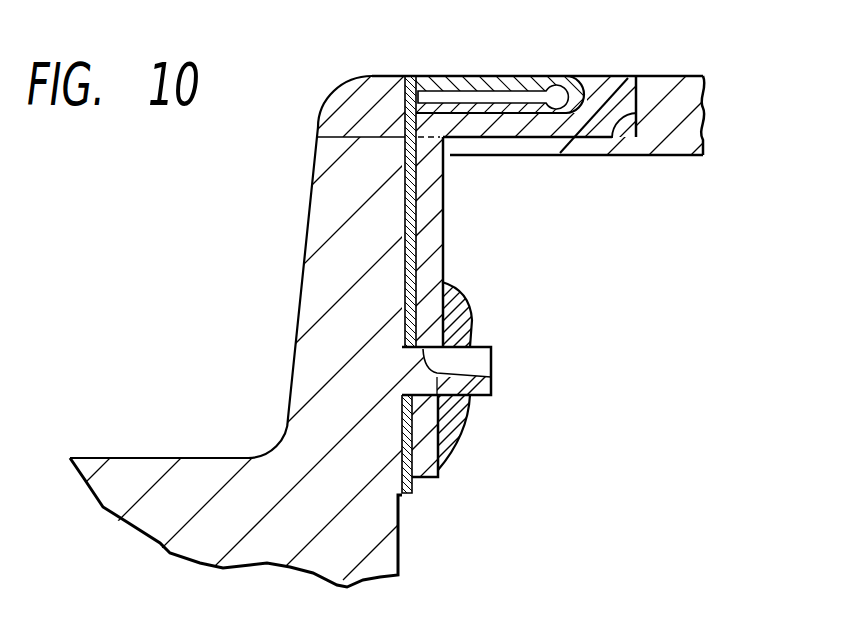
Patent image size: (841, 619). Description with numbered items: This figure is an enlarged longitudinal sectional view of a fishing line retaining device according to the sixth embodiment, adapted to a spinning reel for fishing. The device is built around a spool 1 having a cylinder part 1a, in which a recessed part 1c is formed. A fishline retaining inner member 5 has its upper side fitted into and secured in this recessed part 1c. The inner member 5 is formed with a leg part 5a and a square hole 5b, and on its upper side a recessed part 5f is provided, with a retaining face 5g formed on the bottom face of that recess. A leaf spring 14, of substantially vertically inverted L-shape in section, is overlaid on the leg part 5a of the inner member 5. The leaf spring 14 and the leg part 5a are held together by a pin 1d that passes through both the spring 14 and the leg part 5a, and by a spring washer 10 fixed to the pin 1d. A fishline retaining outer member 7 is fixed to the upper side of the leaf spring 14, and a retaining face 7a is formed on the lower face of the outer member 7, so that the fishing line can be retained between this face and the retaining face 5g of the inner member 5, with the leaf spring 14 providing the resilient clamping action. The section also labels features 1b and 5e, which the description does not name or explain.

The spool 1 is at (284, 316).
The cylinder part 1a is at (677, 86).
The annular slot 1b is at (490, 143).
The recessed part 1c is at (612, 139).
The pin 1d is at (483, 357).
The fishline retaining inner member 5 is at (626, 66).
The leg part 5a is at (432, 255).
The square hole 5b is at (406, 114).
The sleeve flange 5e is at (490, 377).
The recessed part 5f is at (597, 105).
The retaining face 5g is at (542, 112).
The fishline retaining outer member 7 is at (440, 66).
The retaining face 7a is at (477, 115).
The spring washer 10 is at (463, 316).
The leaf spring 14 is at (405, 212).